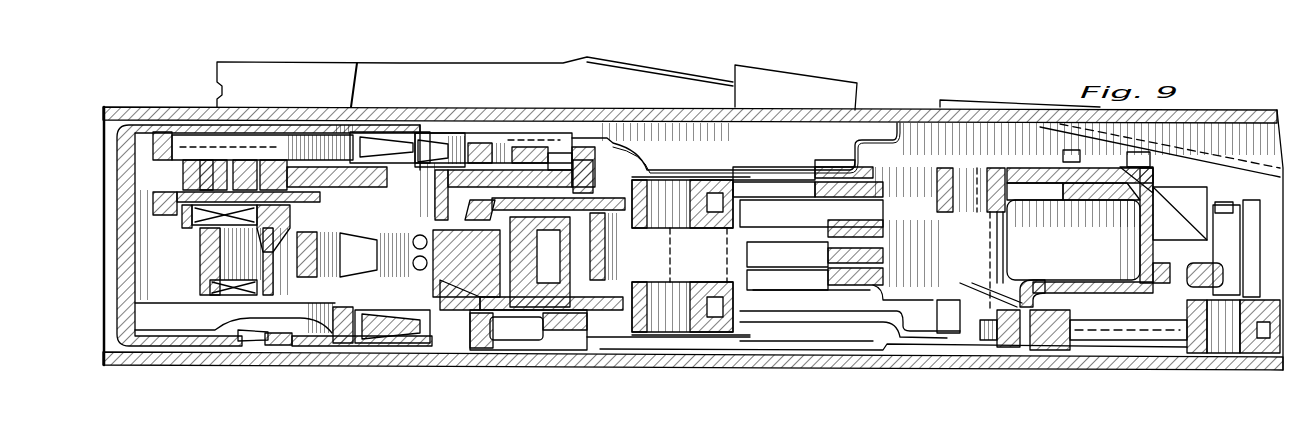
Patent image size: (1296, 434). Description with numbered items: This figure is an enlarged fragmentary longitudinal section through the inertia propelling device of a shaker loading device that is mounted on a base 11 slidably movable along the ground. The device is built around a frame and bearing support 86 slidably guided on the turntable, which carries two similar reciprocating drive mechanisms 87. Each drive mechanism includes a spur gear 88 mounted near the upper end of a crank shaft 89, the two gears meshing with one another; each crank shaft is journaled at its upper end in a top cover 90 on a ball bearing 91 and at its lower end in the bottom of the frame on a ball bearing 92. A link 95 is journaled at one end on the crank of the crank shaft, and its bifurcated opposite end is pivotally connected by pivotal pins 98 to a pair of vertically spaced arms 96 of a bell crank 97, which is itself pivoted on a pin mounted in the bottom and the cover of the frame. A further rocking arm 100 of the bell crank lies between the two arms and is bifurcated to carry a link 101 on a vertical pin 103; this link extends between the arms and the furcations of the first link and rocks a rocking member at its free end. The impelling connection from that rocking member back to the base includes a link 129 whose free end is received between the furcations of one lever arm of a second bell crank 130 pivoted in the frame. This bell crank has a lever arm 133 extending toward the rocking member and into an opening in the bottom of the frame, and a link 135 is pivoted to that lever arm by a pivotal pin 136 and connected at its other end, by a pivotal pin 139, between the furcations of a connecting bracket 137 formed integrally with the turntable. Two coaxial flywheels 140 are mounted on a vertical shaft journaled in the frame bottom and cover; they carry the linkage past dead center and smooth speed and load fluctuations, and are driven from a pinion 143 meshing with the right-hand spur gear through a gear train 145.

The base 11 is at (693, 224).
The frame and bearing support 86 is at (846, 155).
The reciprocating drive mechanism 87 is at (392, 353).
The spur gear 88 is at (521, 135).
The crank shaft 89 is at (466, 312).
The top cover 90 is at (508, 215).
The ball bearing 91 is at (460, 125).
The ball bearing 92 is at (347, 359).
The link 95 is at (272, 361).
The arm 96 is at (698, 265).
The bell crank 97 is at (833, 165).
The pivotal pin 98 is at (677, 277).
The rocking arm 100 is at (535, 352).
The link 101 is at (811, 213).
The vertical pin 103 is at (551, 354).
The link 129 is at (843, 260).
The bell crank 130 is at (1000, 245).
The lever arm 133 is at (1000, 357).
The link 135 is at (1128, 363).
The pivotal pin 136 is at (1050, 357).
The connecting bracket 137 is at (1256, 353).
The pivotal pin 139 is at (1211, 355).
The flywheel 140 is at (244, 239).
The pinion 143 is at (248, 181).
The gear train 145 is at (157, 191).